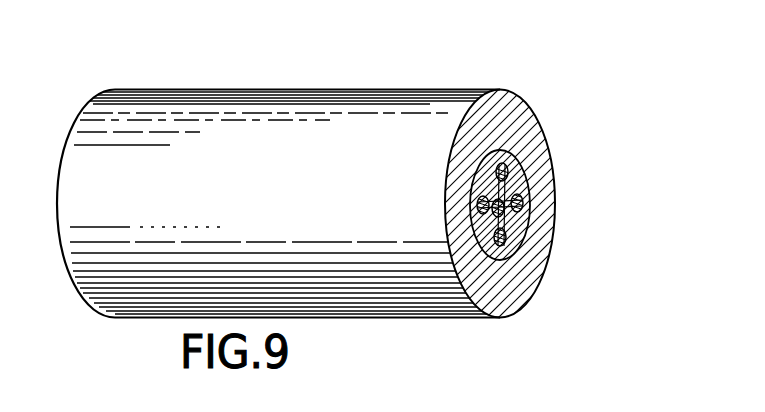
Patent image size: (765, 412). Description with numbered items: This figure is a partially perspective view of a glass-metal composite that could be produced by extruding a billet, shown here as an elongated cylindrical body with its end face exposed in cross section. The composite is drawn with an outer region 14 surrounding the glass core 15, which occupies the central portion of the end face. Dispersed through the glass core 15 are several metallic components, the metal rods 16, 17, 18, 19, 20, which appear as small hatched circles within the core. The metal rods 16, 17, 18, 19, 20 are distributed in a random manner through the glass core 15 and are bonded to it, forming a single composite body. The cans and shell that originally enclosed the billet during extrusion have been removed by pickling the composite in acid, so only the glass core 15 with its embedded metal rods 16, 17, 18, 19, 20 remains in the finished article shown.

The outer jacket 14 is at (520, 122).
The glass core 15 is at (506, 214).
The metal rod 16 is at (507, 173).
The metal rod 17 is at (523, 202).
The metal rod 18 is at (507, 247).
The metal rod 19 is at (501, 262).
The metal rod 20 is at (522, 244).